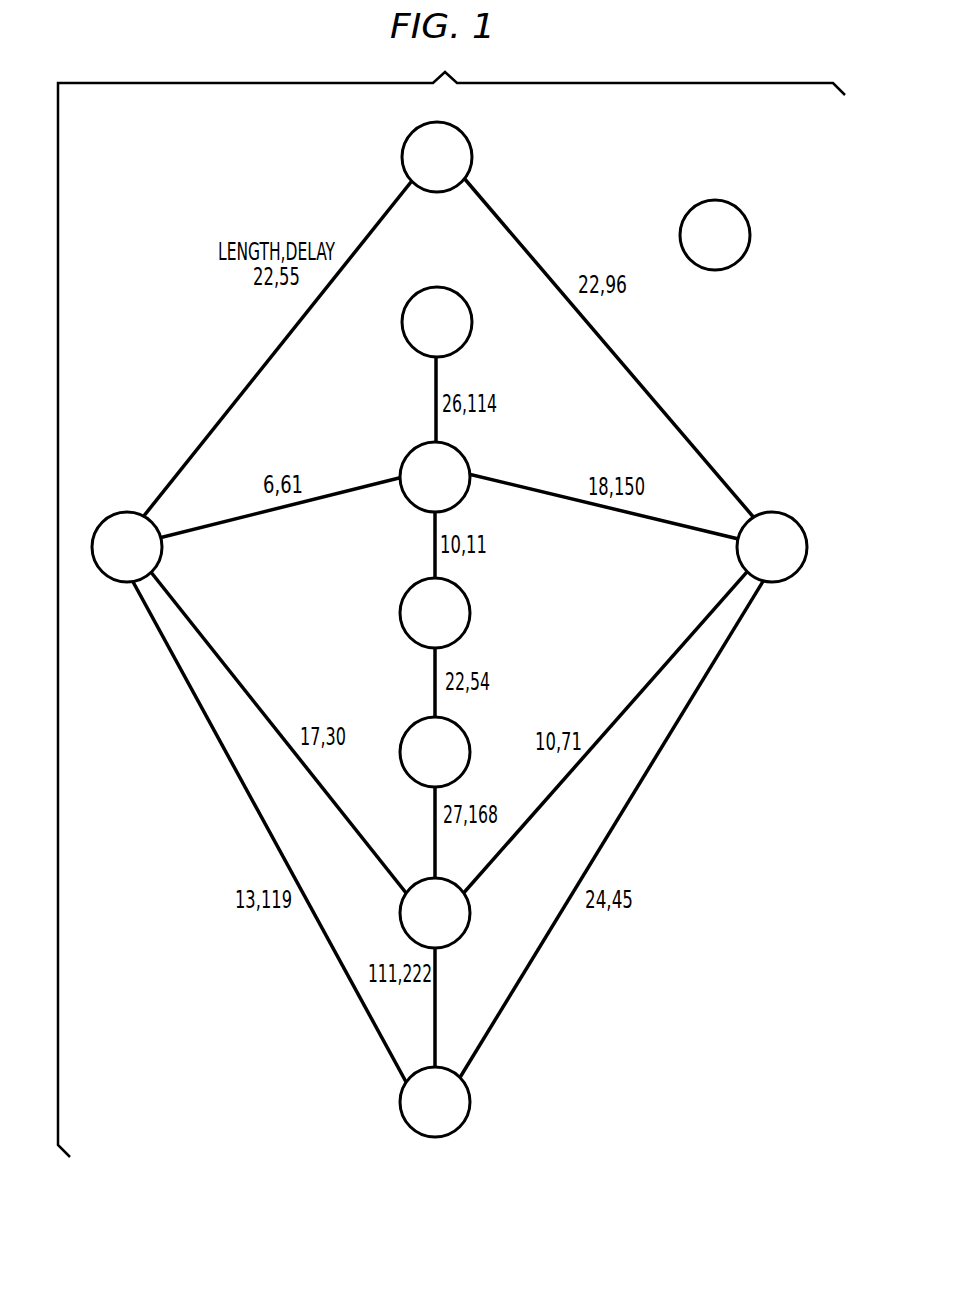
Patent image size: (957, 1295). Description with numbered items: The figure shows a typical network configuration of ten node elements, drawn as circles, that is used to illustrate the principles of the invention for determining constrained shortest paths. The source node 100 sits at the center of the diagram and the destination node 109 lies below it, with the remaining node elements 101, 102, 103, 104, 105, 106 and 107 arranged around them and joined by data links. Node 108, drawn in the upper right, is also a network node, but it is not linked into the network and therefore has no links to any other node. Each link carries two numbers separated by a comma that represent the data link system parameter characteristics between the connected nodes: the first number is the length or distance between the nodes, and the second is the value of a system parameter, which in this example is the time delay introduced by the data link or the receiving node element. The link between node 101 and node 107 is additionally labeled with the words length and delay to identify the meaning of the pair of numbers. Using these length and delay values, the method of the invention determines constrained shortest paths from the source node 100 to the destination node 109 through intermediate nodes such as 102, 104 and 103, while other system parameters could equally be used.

The source node 100 is at (458, 448).
The node element 101 is at (468, 140).
The node element 102 is at (470, 312).
The node element 103 is at (463, 767).
The node element 104 is at (463, 593).
The node element 105 is at (470, 1095).
The node element 106 is at (795, 578).
The node element 107 is at (160, 553).
The unlinked network node 108 is at (748, 218).
The destination node 109 is at (468, 913).